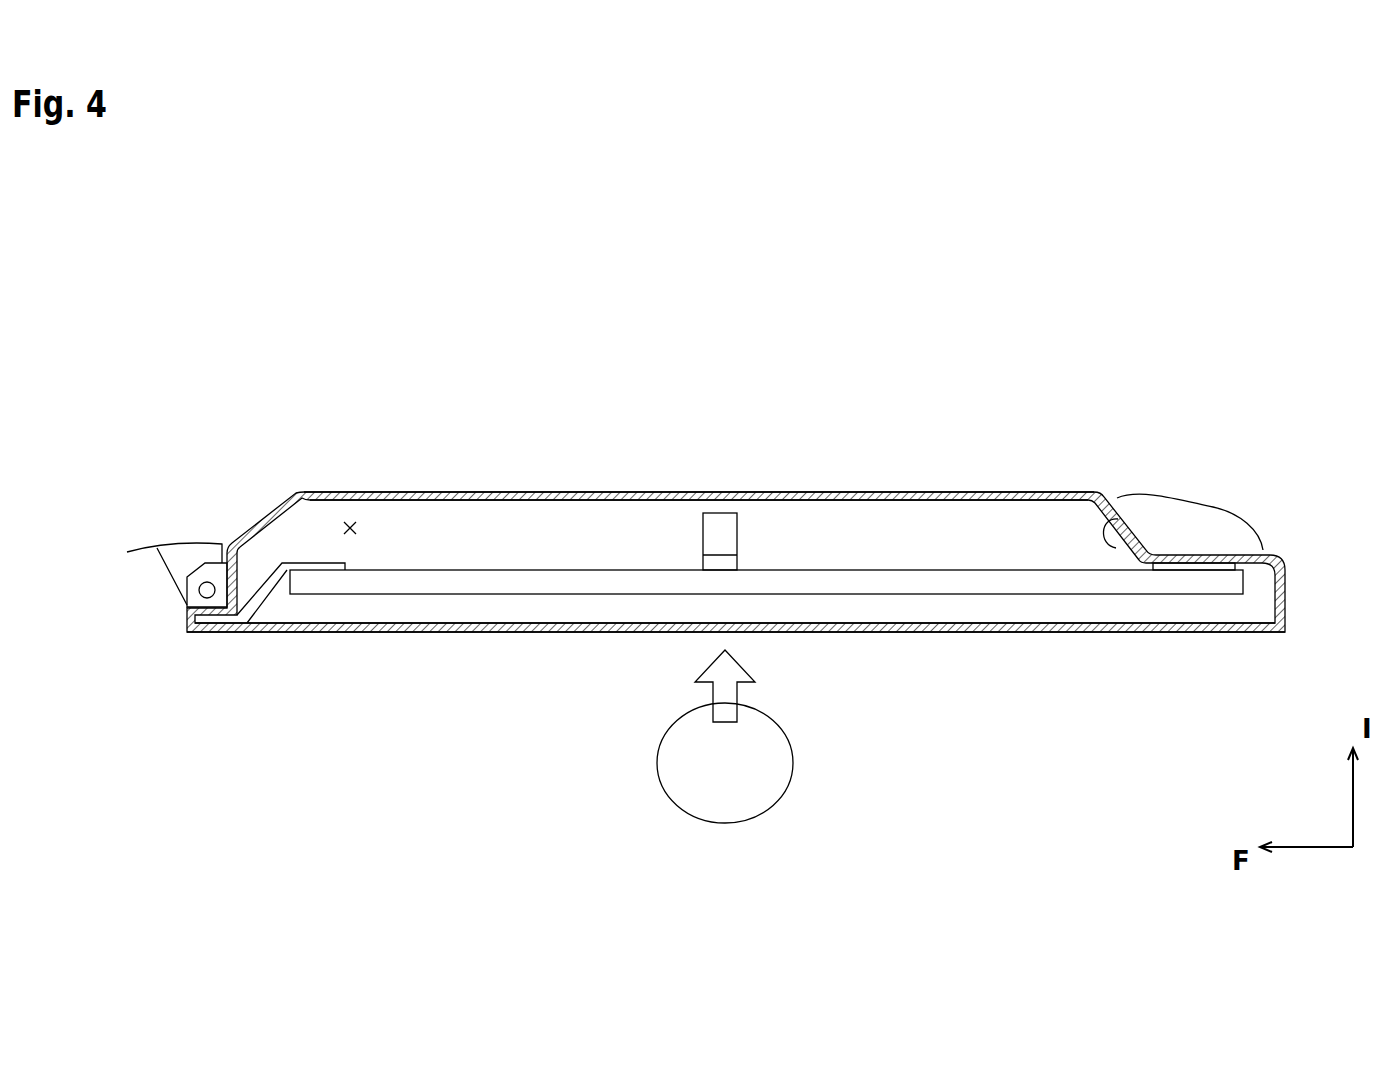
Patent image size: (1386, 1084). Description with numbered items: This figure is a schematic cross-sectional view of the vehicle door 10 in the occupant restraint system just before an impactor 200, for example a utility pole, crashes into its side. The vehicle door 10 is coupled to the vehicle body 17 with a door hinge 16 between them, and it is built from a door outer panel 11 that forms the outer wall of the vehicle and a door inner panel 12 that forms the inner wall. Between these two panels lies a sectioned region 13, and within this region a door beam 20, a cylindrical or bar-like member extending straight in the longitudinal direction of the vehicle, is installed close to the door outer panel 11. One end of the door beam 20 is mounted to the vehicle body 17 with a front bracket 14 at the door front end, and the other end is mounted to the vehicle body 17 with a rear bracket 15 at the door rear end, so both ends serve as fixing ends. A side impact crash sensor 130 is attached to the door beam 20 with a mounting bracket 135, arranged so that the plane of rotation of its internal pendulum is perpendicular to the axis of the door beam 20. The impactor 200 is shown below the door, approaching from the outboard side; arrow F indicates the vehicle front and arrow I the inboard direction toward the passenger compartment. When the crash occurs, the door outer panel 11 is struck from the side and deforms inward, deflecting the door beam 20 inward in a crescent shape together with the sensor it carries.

The vehicle door 10 is at (1080, 442).
The door outer panel 11 is at (254, 642).
The door inner panel 12 is at (341, 479).
The sectioned region 13 is at (368, 532).
The front bracket 14 is at (270, 582).
The rear bracket 15 is at (1200, 565).
The door hinge 16 is at (186, 550).
The vehicle body 17 is at (1143, 508).
The door beam 20 is at (947, 561).
The side impact crash sensor 130 is at (729, 503).
The mounting bracket 135 is at (718, 565).
The impactor 200 is at (763, 748).